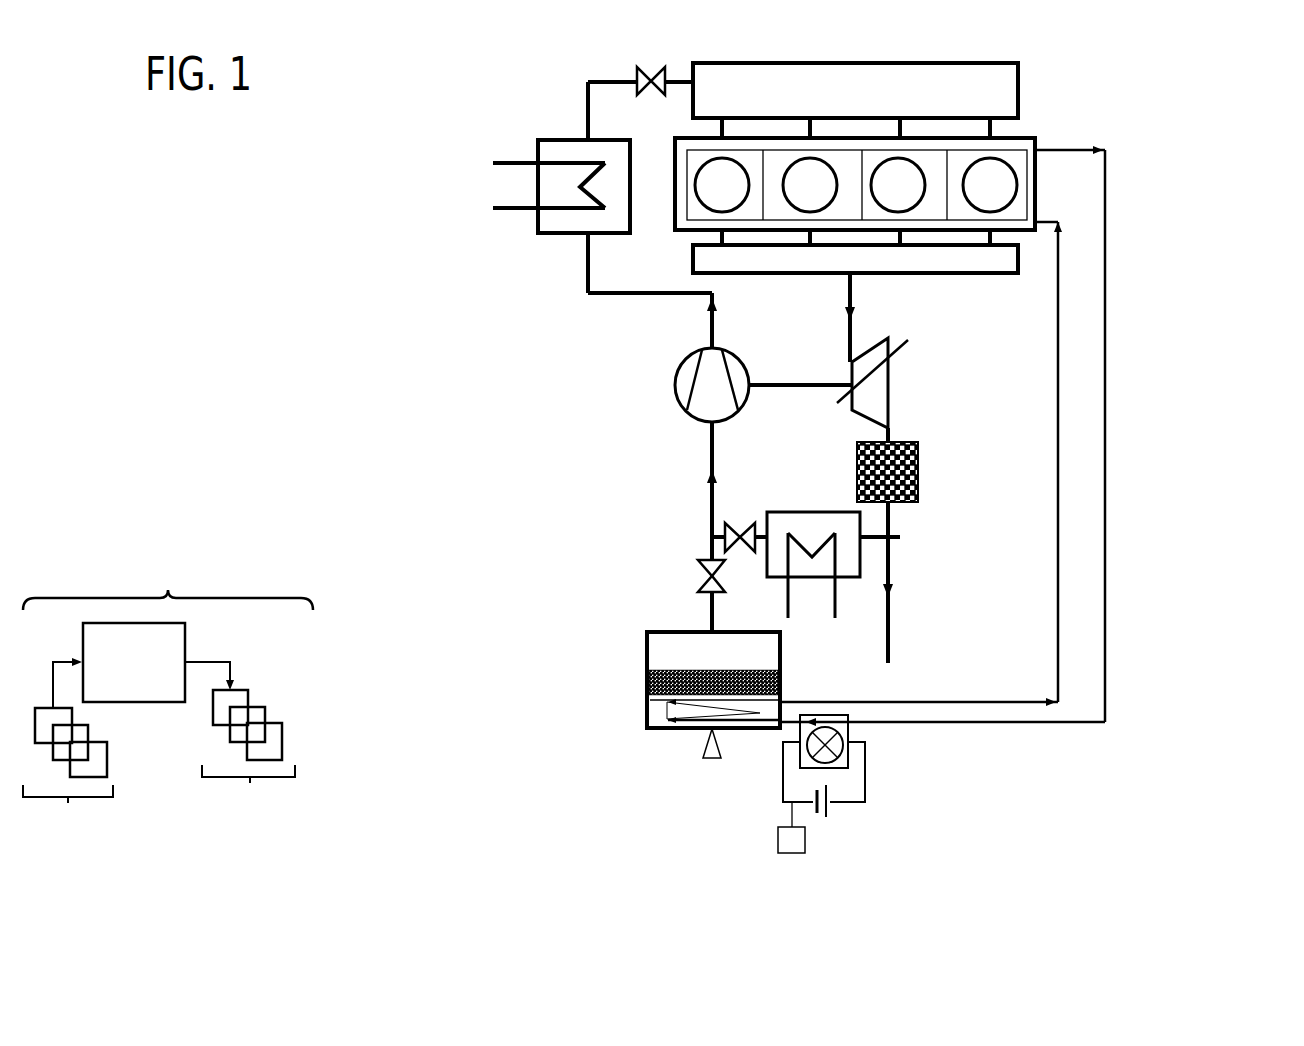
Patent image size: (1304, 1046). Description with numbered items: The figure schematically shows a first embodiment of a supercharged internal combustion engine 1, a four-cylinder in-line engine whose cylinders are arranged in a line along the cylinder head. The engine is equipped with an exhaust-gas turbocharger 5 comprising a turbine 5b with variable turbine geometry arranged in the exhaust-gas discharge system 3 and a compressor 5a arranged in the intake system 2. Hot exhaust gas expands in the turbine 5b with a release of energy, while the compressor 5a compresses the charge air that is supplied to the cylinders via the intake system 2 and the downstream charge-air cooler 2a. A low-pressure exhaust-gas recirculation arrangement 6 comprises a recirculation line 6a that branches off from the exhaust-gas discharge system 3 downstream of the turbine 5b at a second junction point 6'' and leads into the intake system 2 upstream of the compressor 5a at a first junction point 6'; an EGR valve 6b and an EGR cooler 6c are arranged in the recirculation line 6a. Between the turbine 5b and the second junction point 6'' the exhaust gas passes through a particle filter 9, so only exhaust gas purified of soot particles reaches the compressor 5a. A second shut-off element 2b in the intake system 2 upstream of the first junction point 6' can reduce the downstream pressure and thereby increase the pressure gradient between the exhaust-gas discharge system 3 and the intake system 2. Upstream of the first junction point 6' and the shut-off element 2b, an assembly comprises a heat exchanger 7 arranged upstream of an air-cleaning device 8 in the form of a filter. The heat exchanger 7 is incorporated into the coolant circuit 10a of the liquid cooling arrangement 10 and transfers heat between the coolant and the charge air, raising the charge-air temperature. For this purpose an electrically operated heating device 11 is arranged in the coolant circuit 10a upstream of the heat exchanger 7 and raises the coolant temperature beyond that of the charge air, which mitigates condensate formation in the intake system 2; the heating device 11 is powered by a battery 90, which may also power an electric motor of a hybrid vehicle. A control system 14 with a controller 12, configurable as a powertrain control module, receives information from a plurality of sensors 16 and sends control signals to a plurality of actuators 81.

The supercharged internal combustion engine 1 is at (1205, 148).
The charge-air cooler 2a is at (538, 223).
The compressor 5a is at (673, 385).
The exhaust-gas turbocharger 5 is at (800, 364).
The turbine 5b is at (891, 387).
The particle filter 9 is at (920, 473).
The intake system 2 is at (632, 491).
The exhaust-gas discharge system 3 is at (956, 616).
The exhaust-gas recirculation arrangement 6 is at (813, 543).
The recirculation line 6a is at (762, 512).
The EGR cooler 6c is at (838, 512).
The EGR valve 6b is at (748, 553).
The first junction point 6' is at (651, 538).
The second junction point 6'' is at (933, 539).
The second shut-off element 2b is at (698, 565).
The heat exchanger 7 is at (637, 740).
The air-cleaning device 8 is at (657, 682).
The liquid cooling arrangement 10 is at (1107, 335).
The coolant circuit 10a is at (1105, 588).
The electrically operated heating device 11 is at (882, 770).
The battery 90 is at (778, 843).
The control system 14 is at (168, 574).
The controller 12 is at (134, 662).
The sensors 16 is at (68, 751).
The actuators 81 is at (240, 744).